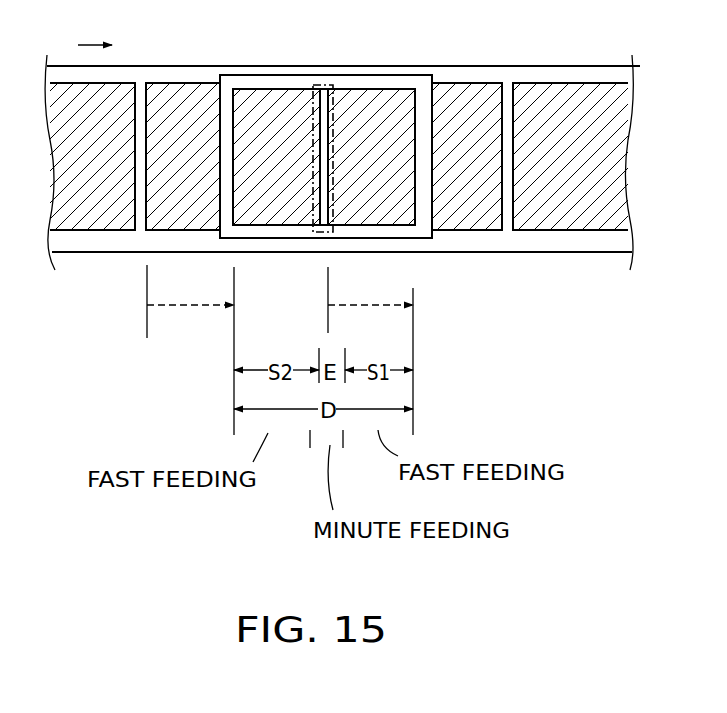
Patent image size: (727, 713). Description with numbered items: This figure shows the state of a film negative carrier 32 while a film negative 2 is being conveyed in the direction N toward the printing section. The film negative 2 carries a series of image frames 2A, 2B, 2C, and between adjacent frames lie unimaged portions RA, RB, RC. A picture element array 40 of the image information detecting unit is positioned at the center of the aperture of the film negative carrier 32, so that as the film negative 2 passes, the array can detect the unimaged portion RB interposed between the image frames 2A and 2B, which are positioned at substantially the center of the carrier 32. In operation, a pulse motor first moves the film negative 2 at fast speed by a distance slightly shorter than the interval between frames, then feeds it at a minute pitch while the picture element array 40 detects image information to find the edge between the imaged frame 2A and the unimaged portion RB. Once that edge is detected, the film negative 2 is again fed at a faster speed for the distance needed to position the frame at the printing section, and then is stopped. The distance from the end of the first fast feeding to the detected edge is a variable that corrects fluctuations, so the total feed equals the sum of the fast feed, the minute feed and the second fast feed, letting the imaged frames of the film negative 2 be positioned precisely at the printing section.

The film negative 2 is at (103, 252).
The imaged frame 2A is at (187, 98).
The image frame 2B is at (390, 110).
The image frame 2C is at (588, 108).
The unimaged portion between frames RA is at (141, 100).
The unimaged portion between frames RB is at (325, 107).
The unimaged portion between frames RC is at (506, 100).
The film negative carrier 32 is at (416, 238).
The picture element array 40 is at (312, 107).
The conveying direction N is at (108, 44).